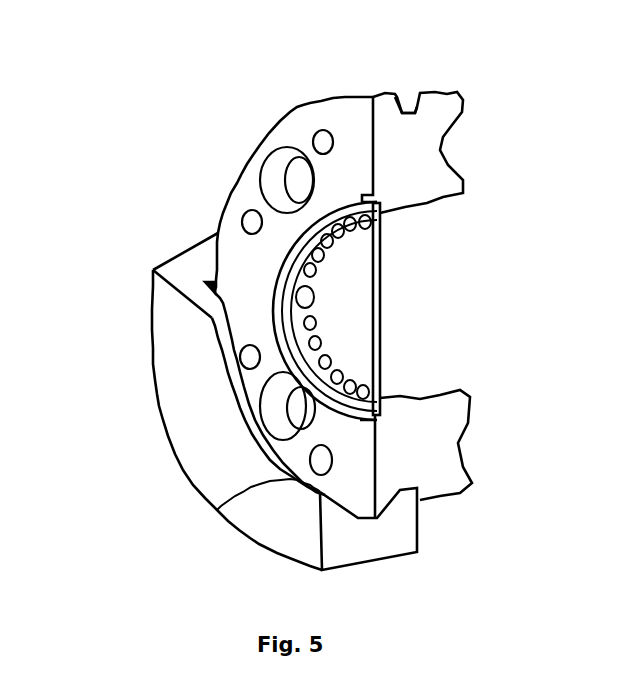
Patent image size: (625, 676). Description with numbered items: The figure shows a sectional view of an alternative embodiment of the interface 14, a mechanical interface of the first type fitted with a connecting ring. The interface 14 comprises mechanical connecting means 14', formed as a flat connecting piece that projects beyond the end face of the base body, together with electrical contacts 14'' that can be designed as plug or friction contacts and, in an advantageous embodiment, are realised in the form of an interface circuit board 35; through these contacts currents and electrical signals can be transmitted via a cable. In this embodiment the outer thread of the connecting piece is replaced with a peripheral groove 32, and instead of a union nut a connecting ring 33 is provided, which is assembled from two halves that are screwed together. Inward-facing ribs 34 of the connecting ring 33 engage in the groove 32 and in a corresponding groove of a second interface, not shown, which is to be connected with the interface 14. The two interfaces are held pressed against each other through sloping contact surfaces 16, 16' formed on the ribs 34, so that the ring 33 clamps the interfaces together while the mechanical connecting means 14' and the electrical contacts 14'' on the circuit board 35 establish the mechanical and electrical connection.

The interface 14 is at (284, 296).
The mechanical connecting means 14' is at (206, 302).
The electrical contacts 14'' is at (229, 311).
The sloping contact surface 16 is at (245, 519).
The sloping contact surface 16' is at (411, 419).
The peripheral groove 32 is at (407, 107).
The connecting ring 33 is at (217, 452).
The inward-facing ribs 34 is at (337, 515).
The interface circuit board 35 is at (363, 315).